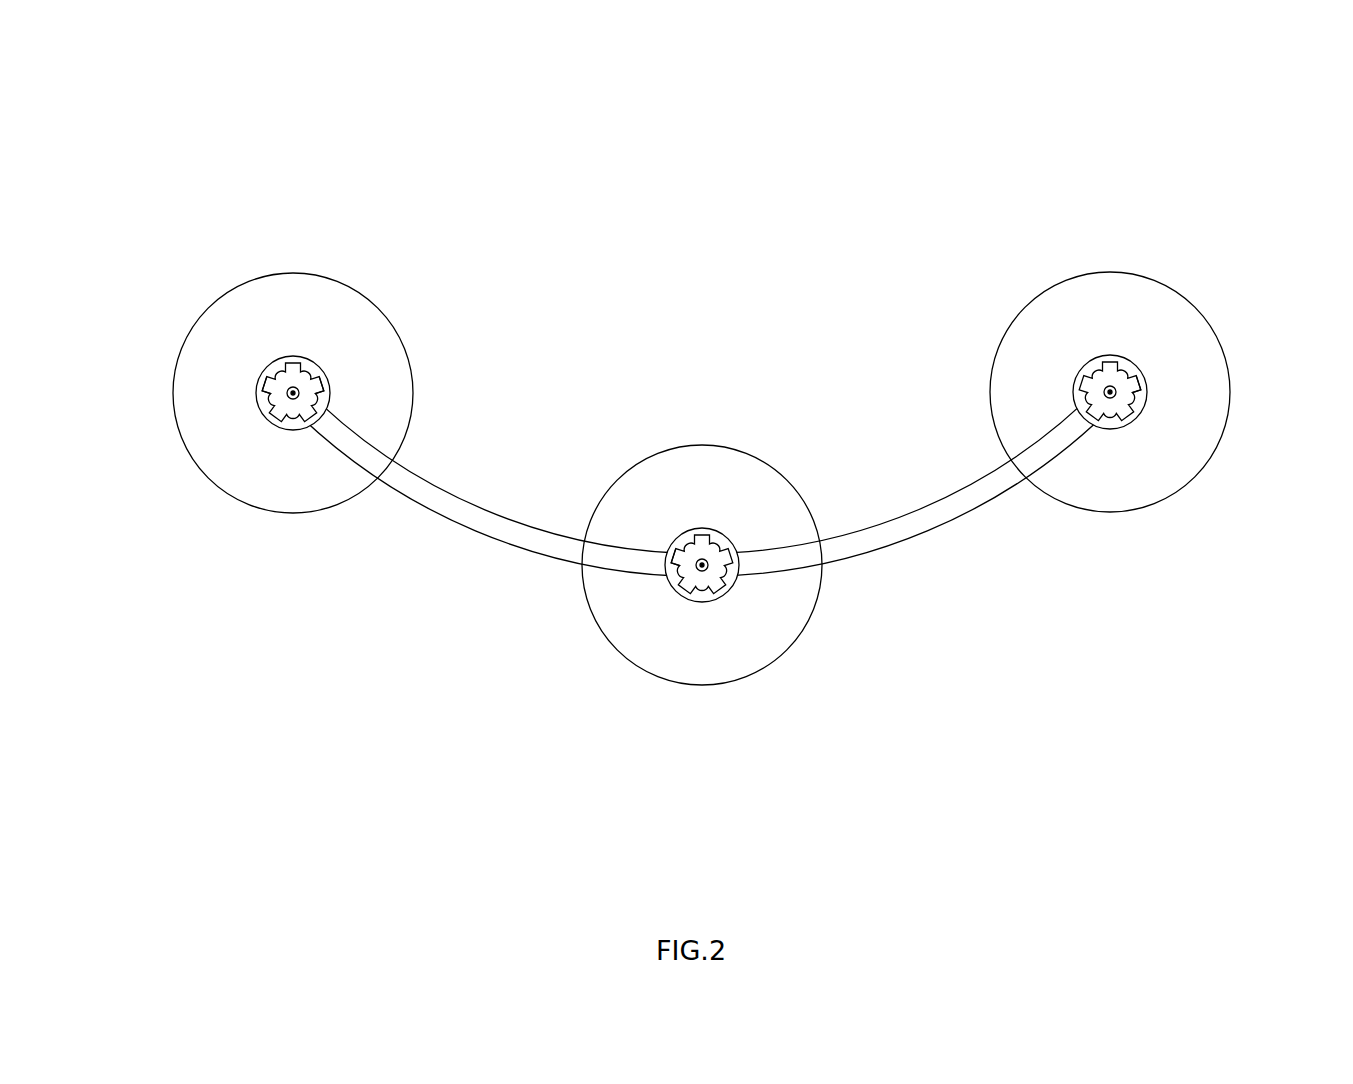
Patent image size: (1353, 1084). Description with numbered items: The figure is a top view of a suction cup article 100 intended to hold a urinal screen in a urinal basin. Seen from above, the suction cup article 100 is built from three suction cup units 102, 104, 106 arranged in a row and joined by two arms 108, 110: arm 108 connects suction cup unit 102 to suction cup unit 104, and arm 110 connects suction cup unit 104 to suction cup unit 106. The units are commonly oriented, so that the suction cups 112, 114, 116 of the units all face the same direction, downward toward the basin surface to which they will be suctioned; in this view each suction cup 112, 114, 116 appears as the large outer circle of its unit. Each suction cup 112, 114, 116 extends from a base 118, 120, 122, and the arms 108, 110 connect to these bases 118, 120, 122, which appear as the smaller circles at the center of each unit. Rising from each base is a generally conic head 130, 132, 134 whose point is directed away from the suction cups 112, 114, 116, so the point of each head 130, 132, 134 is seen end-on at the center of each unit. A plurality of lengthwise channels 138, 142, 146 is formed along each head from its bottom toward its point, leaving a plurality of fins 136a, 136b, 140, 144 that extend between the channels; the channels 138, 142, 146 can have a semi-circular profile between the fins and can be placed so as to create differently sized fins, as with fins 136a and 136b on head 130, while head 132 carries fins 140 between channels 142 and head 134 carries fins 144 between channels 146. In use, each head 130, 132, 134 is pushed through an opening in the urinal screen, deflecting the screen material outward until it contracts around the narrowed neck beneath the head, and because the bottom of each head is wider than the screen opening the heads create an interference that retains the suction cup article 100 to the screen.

The suction cup article 100 is at (250, 62).
The suction cup unit 102 is at (292, 530).
The suction cup unit 104 is at (699, 705).
The suction cup unit 106 is at (1107, 532).
The arm 108 is at (475, 535).
The arm 110 is at (907, 548).
The suction cup 112 is at (330, 490).
The suction cup 114 is at (750, 653).
The suction cup 116 is at (1180, 335).
The base 118 is at (267, 425).
The base 120 is at (677, 593).
The base 122 is at (1138, 425).
The head 130 is at (294, 390).
The head 132 is at (703, 560).
The head 134 is at (1111, 390).
The fin 136a is at (293, 363).
The fin 136b is at (328, 373).
The lengthwise channels 138 is at (263, 393).
The fins 140 is at (700, 530).
The lengthwise channels 142 is at (677, 563).
The fins 144 is at (1110, 360).
The lengthwise channels 146 is at (1140, 393).